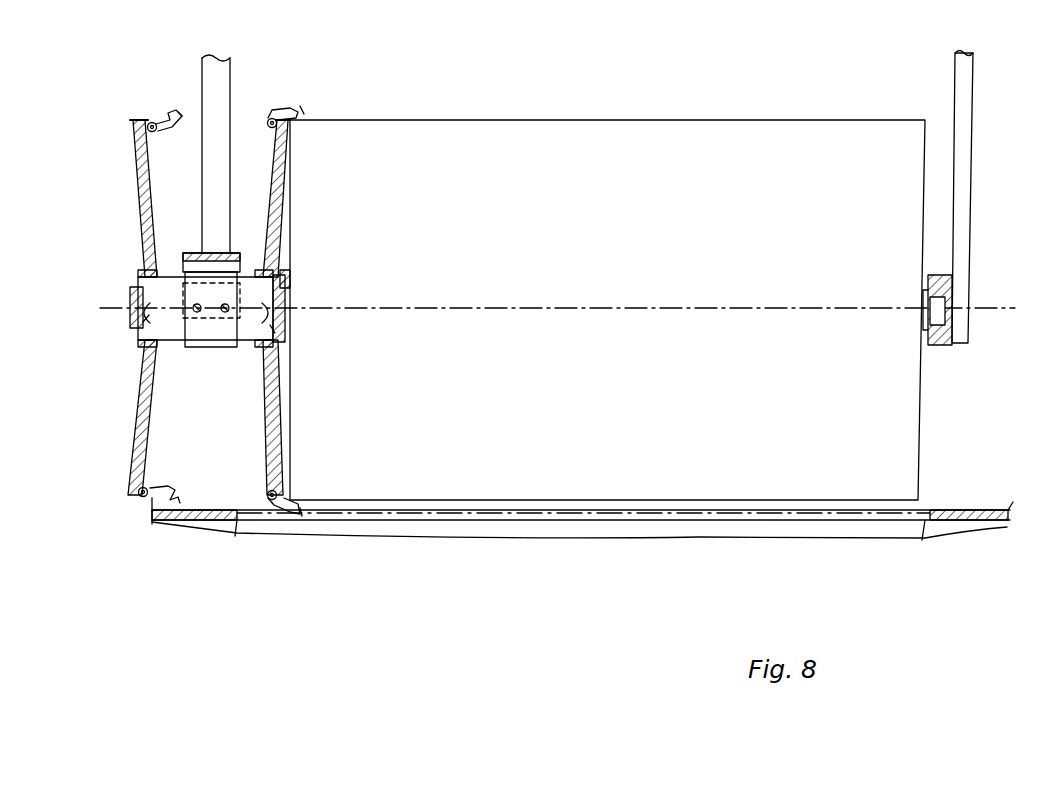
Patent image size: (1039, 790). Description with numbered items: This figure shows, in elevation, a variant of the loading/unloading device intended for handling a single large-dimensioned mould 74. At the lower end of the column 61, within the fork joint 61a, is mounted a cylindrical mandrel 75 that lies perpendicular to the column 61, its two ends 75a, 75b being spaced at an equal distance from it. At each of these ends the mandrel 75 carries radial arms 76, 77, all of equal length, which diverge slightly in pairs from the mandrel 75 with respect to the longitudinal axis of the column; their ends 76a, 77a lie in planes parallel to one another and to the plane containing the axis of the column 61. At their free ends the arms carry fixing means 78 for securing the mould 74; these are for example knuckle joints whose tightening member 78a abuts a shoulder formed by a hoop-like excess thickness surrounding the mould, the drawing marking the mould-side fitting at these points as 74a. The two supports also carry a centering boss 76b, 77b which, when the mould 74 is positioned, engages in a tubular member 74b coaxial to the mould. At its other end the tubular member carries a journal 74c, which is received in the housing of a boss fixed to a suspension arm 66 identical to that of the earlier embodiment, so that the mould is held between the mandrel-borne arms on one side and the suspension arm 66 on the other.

The column 61 is at (216, 157).
The fork joint 61a is at (188, 254).
The suspension arm 66 is at (970, 92).
The mould 74 is at (570, 120).
The roller end hinge bracket 74a is at (286, 110).
The tubular member 74b is at (286, 272).
The journal 74c is at (930, 300).
The cylindrical mandrel 75 is at (208, 347).
The mandrel end 75a is at (130, 322).
The mandrel end 75b is at (282, 325).
The radial arm 76 is at (140, 200).
The arm end 76a is at (135, 127).
The centering boss 76b is at (128, 287).
The radial arm 77 is at (272, 222).
The arm end 77a is at (292, 126).
The centering boss 77b is at (286, 297).
The fixing means 78 is at (150, 122).
The tightening member 78a is at (176, 112).